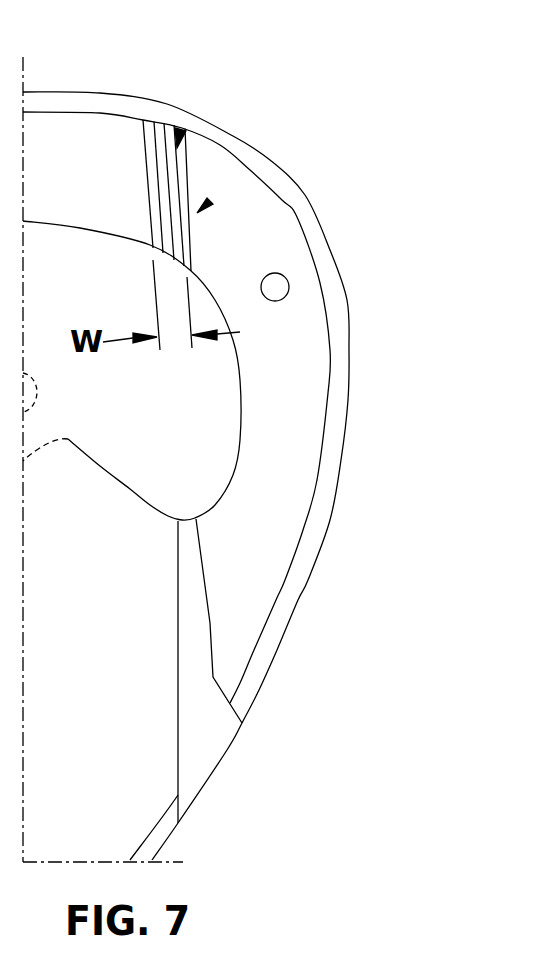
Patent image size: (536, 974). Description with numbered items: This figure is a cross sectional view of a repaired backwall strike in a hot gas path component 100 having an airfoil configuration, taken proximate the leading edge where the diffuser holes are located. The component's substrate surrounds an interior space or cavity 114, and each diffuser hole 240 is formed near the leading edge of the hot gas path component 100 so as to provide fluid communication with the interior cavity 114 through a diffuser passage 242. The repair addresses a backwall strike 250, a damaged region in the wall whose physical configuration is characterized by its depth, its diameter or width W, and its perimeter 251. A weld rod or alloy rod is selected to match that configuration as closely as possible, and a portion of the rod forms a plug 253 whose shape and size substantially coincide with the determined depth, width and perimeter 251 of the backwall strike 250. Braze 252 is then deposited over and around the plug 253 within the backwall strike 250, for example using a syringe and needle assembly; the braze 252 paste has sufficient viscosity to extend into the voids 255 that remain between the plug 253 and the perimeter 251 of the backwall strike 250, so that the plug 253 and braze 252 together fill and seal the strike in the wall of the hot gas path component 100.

The hot gas path component 100 is at (465, 320).
The interior space or cavity 114 is at (148, 415).
The diffuser hole 240 is at (203, 758).
The diffuser passage 242 is at (208, 623).
The backwall strike 250 is at (208, 203).
The perimeter 251 is at (143, 168).
The braze 252 is at (147, 136).
The plug 253 is at (163, 137).
The voids 255 is at (182, 133).